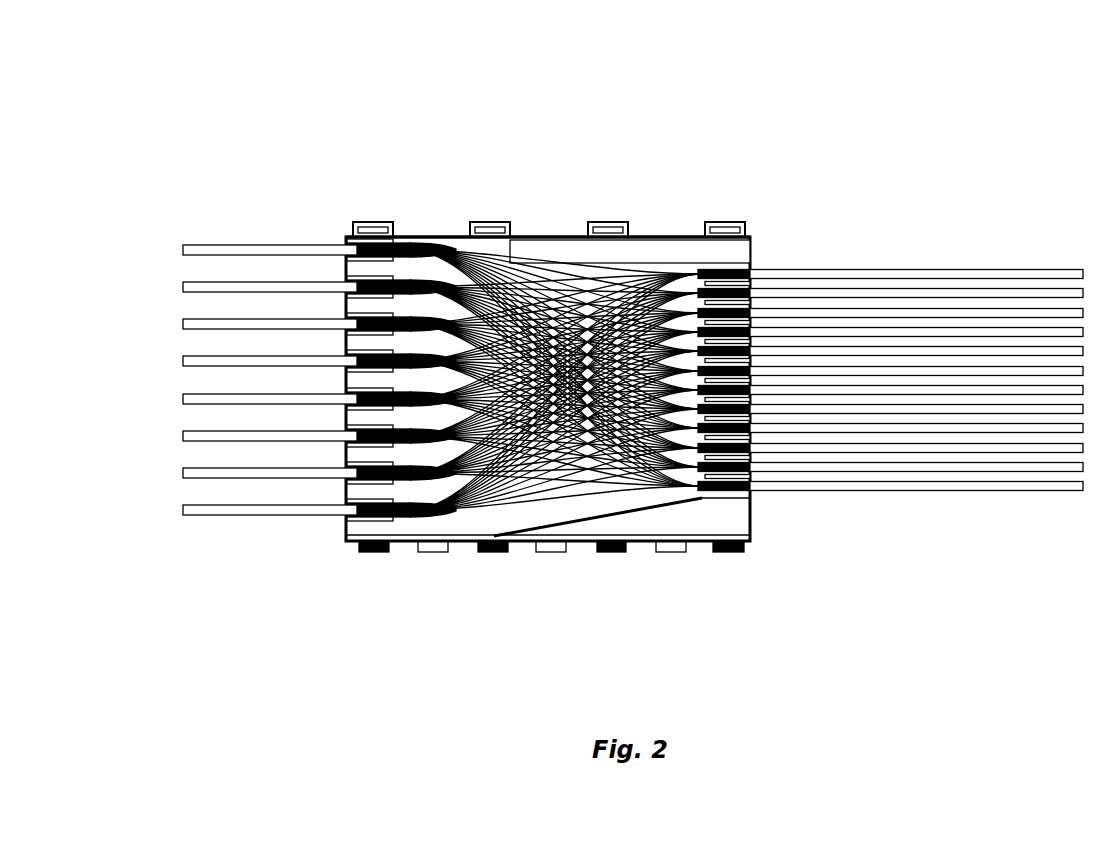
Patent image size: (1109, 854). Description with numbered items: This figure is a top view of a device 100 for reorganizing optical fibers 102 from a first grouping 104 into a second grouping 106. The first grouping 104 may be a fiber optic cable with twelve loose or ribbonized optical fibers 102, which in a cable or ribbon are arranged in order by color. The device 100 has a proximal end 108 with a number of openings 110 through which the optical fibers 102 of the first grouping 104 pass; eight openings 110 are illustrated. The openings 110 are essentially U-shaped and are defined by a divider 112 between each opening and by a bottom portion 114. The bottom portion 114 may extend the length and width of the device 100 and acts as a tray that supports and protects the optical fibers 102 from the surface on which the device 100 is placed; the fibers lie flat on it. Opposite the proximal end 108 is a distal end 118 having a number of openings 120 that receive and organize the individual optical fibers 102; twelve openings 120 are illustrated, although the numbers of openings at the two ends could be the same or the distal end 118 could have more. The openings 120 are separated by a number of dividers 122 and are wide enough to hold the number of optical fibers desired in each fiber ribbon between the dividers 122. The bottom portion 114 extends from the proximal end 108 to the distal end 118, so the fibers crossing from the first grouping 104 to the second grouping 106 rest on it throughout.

The device 100 is at (770, 110).
The optical fibers 102 is at (516, 512).
The first grouping 104 is at (183, 521).
The second grouping 106 is at (787, 492).
The proximal end 108 is at (342, 239).
The openings 110 is at (347, 522).
The divider 112 is at (387, 523).
The bottom portion 114 is at (734, 526).
The distal end 118 is at (752, 247).
The openings 120 is at (752, 262).
The dividers 122 is at (752, 499).